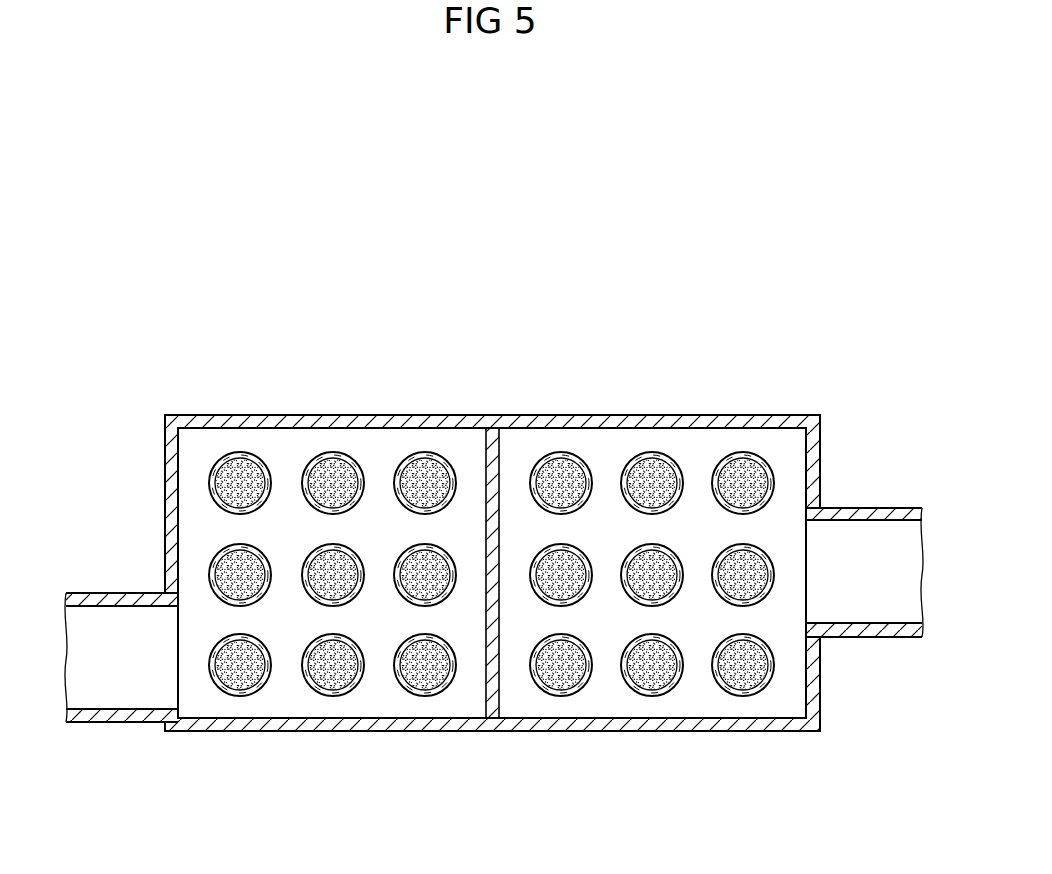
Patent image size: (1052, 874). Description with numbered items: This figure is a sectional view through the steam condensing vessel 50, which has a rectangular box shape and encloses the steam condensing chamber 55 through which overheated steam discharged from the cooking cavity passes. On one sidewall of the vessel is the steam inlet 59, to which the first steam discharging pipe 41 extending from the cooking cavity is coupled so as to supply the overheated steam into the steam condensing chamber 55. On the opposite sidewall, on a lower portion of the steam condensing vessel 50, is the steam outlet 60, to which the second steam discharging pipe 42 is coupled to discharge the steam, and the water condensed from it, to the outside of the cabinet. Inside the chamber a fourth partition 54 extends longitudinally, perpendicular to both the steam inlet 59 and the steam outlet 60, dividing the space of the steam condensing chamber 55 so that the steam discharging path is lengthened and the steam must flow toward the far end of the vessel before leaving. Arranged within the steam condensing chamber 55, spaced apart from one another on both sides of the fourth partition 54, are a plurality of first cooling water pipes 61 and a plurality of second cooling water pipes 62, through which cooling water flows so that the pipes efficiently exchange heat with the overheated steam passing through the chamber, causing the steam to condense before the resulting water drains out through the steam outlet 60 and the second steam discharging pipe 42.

The steam condensing vessel 50 is at (460, 415).
The fourth partition 54 is at (500, 450).
The steam condensing chamber 55 is at (298, 452).
The first cooling water pipes 61 is at (355, 462).
The second cooling water pipes 62 is at (676, 455).
The steam inlet 59 is at (836, 540).
The first steam discharging pipe 41 is at (862, 637).
The steam outlet 60 is at (170, 600).
The second steam discharging pipe 42 is at (115, 722).